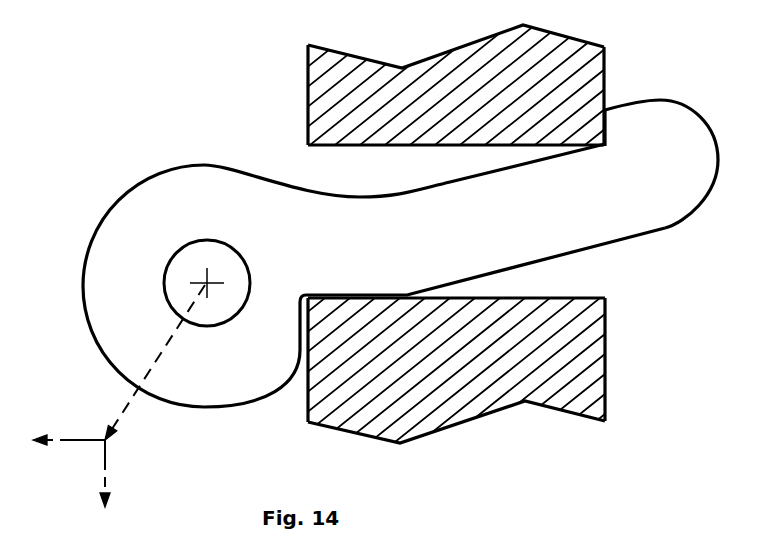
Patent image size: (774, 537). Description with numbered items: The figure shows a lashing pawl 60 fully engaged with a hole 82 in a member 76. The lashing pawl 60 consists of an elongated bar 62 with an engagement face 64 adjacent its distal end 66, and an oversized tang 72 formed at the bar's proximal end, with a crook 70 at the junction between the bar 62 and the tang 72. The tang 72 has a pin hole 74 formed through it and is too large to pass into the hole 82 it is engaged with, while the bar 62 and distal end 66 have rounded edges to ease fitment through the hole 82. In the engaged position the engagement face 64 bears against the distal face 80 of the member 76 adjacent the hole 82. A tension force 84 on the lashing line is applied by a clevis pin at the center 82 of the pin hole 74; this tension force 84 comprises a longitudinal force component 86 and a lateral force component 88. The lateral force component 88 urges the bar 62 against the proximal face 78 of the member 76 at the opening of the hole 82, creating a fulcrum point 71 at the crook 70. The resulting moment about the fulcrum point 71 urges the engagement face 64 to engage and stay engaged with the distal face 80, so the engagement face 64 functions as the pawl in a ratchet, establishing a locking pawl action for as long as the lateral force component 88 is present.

The lashing pawl 60 is at (190, 126).
The elongated bar 62 is at (652, 237).
The engagement face 64 is at (607, 128).
The distal end 66 is at (700, 113).
The crook 70 is at (299, 304).
The fulcrum point 71 is at (305, 294).
The tang 72 is at (120, 201).
The pin hole 74 is at (243, 256).
The member 76 is at (437, 53).
The proximal face 78 is at (309, 83).
The distal face 80 is at (605, 88).
The hole 82 is at (312, 147).
The tension force 84 is at (133, 397).
The longitudinal force component 86 is at (85, 439).
The lateral force component 88 is at (105, 460).